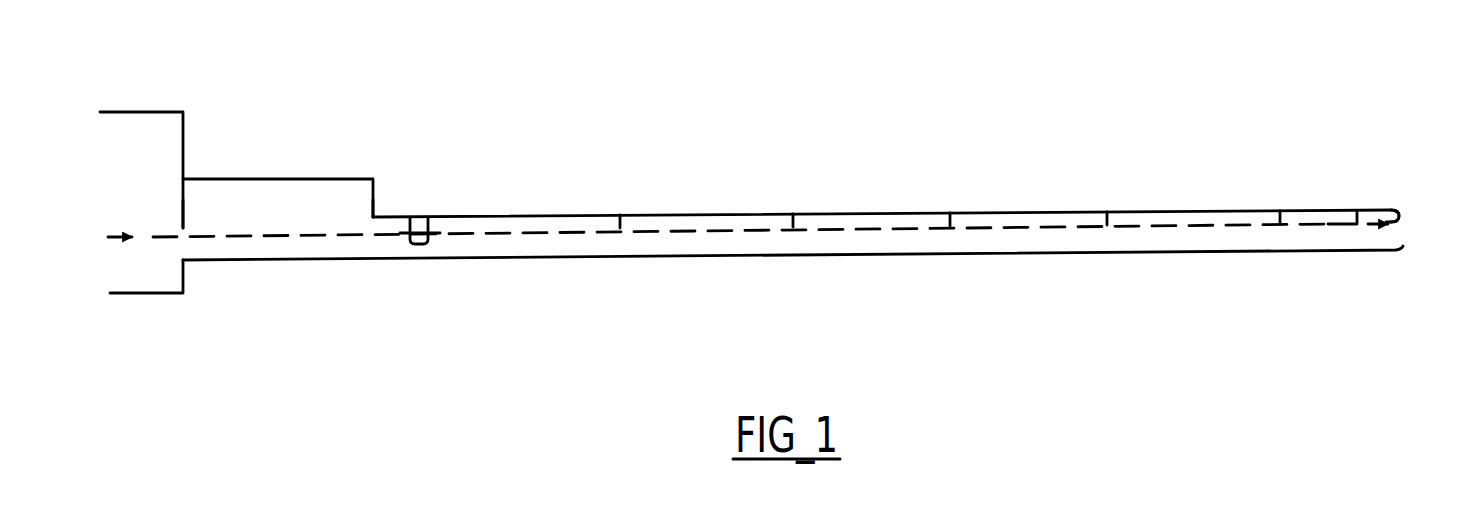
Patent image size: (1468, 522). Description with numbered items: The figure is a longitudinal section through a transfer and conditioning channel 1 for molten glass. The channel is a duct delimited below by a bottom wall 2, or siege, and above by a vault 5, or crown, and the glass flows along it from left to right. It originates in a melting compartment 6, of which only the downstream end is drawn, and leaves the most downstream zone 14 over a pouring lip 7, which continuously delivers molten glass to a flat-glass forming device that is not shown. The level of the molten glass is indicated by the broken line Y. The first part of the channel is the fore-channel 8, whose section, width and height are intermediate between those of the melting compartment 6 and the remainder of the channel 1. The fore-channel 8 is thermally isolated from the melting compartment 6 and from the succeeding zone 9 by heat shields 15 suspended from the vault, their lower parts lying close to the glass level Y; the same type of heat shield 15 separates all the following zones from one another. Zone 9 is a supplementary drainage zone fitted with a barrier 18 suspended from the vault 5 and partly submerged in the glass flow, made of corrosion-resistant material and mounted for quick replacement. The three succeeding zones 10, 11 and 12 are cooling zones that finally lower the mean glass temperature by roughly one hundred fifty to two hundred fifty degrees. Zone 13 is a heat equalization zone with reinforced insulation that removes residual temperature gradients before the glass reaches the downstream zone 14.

The transfer and conditioning channel 1 is at (536, 101).
The bottom wall 2 is at (796, 259).
The vault 5 is at (852, 206).
The melting compartment 6 is at (133, 100).
The pouring lip 7 is at (1412, 224).
The fore-channel 8 is at (298, 208).
The supplementary drainage zone 9 is at (503, 224).
The cooling zone 10 is at (704, 221).
The cooling zone 11 is at (894, 219).
The cooling zone 12 is at (1008, 217).
The heat equalization zone 13 is at (1175, 215).
The most downstream zone 14 is at (1318, 214).
The heat shield 15 is at (190, 206).
The barrier 18 is at (426, 215).
The level of molten glass Y is at (1360, 212).